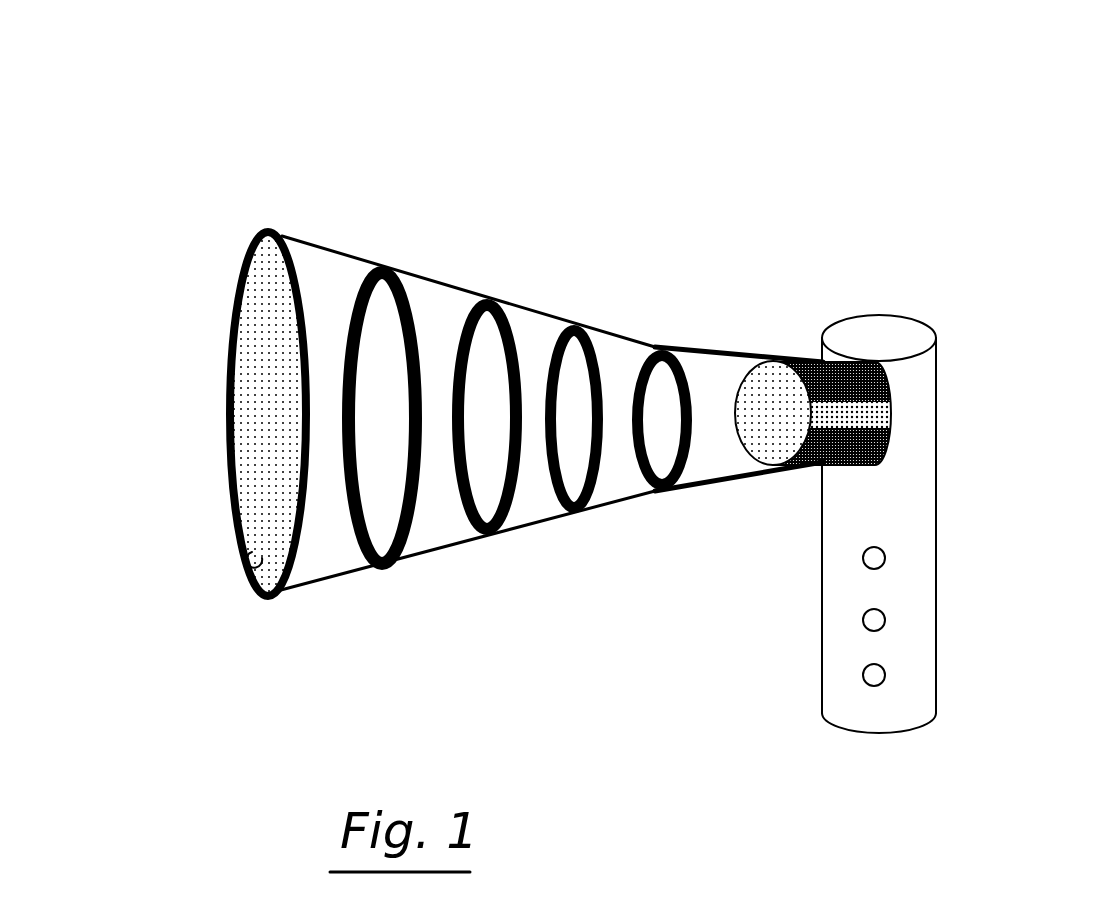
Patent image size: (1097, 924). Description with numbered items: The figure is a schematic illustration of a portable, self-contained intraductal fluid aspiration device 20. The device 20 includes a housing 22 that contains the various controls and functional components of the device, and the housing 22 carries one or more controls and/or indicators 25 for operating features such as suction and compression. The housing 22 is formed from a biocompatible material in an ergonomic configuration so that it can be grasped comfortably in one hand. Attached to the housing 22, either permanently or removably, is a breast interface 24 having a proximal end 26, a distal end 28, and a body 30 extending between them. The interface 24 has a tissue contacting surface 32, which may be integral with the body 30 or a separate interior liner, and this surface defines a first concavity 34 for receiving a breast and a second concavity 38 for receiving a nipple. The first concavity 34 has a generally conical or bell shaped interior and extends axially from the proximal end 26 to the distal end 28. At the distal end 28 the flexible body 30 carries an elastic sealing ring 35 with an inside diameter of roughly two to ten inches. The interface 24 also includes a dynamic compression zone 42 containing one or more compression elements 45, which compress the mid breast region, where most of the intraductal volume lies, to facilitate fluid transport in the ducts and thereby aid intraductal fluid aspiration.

The intraductal fluid aspiration device 20 is at (818, 116).
The housing 22 is at (912, 466).
The breast interface 24 is at (469, 379).
The controls and/or indicators 25 is at (890, 626).
The proximal end 26 is at (770, 355).
The distal end 28 is at (262, 232).
The body 30 is at (530, 332).
The tissue contacting surface 32 is at (240, 572).
The first concavity 34 is at (193, 428).
The elastic sealing ring 35 is at (238, 535).
The second concavity 38 is at (785, 410).
The dynamic compression zone 42 is at (495, 436).
The compression elements 45 is at (382, 266).